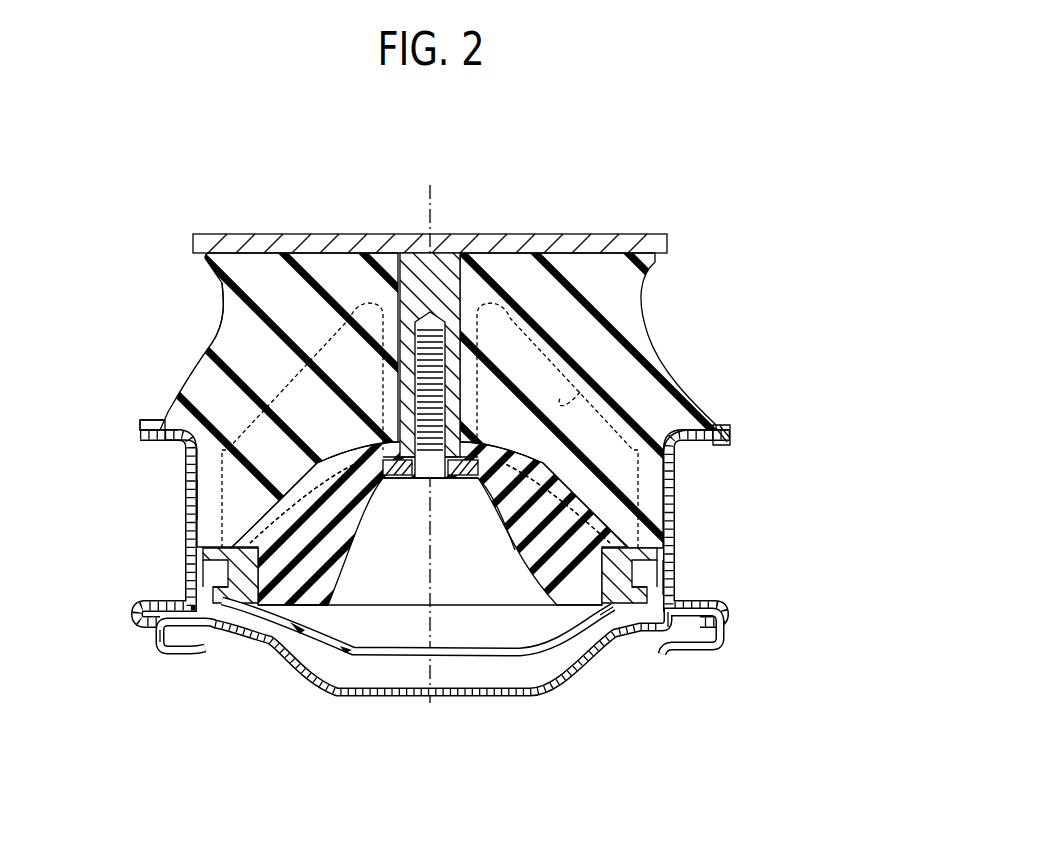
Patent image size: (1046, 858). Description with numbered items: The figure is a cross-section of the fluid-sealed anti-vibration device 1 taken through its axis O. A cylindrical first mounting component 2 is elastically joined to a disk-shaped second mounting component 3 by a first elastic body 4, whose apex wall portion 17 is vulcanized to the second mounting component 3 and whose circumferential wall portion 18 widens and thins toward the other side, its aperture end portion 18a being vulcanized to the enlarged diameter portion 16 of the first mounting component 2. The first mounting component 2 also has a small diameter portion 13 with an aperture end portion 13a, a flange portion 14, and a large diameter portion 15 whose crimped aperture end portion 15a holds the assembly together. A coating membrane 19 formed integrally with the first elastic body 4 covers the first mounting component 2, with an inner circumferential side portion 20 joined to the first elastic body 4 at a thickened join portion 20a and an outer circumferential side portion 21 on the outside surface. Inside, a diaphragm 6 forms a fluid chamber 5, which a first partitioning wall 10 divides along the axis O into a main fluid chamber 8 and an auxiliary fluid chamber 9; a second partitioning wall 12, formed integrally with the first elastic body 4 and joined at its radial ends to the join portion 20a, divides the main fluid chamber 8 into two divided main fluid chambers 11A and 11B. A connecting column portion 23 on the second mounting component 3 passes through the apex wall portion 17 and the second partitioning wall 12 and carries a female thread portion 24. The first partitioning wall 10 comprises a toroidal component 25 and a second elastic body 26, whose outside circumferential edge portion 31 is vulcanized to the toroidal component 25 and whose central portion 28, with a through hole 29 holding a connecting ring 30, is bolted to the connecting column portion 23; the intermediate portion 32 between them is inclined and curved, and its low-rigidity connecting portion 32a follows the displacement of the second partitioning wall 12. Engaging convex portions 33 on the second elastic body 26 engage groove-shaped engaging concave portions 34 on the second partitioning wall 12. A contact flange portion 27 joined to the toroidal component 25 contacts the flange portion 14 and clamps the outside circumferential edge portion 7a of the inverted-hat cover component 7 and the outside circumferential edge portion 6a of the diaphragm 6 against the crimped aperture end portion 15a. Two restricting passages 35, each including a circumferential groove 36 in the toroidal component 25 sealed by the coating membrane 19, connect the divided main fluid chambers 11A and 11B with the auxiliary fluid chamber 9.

The anti-vibration device 1 is at (676, 93).
The first mounting component 2 is at (747, 574).
The second mounting component 3 is at (622, 234).
The first elastic body 4 is at (365, 410).
The fluid chamber 5 is at (432, 694).
The diaphragm 6 is at (460, 657).
The outside circumferential edge portion 6a is at (640, 628).
The cover component 7 is at (516, 697).
The outside circumferential edge portion 7a is at (672, 652).
The main fluid chamber 8 is at (566, 393).
The auxiliary fluid chamber 9 is at (430, 624).
The first partitioning wall 10 is at (252, 654).
The divided main fluid chamber 11A is at (322, 355).
The divided main fluid chamber 11B is at (545, 345).
The second partitioning wall 12 is at (502, 337).
The small diameter portion 13 is at (668, 520).
The aperture end portion 13a is at (670, 578).
The flange portion 14 is at (700, 603).
The large diameter portion 15 is at (702, 632).
The aperture end portion 15a is at (716, 682).
The enlarged diameter portion 16 is at (690, 442).
The apex wall portion 17 is at (237, 270).
The circumferential wall portion 18 is at (223, 347).
The aperture end portion 18a is at (166, 418).
The coating membrane 19 is at (128, 526).
The inner circumferential side portion 20 is at (196, 543).
The join portion 20a is at (156, 499).
The outer circumferential side portion 21 is at (198, 512).
The connecting column portion 23 is at (456, 292).
The female thread portion 24 is at (423, 360).
The toroidal component 25 is at (248, 604).
The second elastic body 26 is at (320, 592).
The contact flange portion 27 is at (198, 628).
The central portion 28 is at (472, 478).
The through hole 29 is at (398, 480).
The connecting ring 30 is at (380, 480).
The outside circumferential edge portion 31 is at (602, 604).
The intermediate portion 32 is at (527, 547).
The connecting portion 32a is at (494, 495).
The engaging convex portion 33 is at (262, 518).
The engaging concave portion 34 is at (277, 510).
The restricting passage 35 is at (216, 575).
The circumferential groove 36 is at (215, 590).
The axis O is at (445, 190).